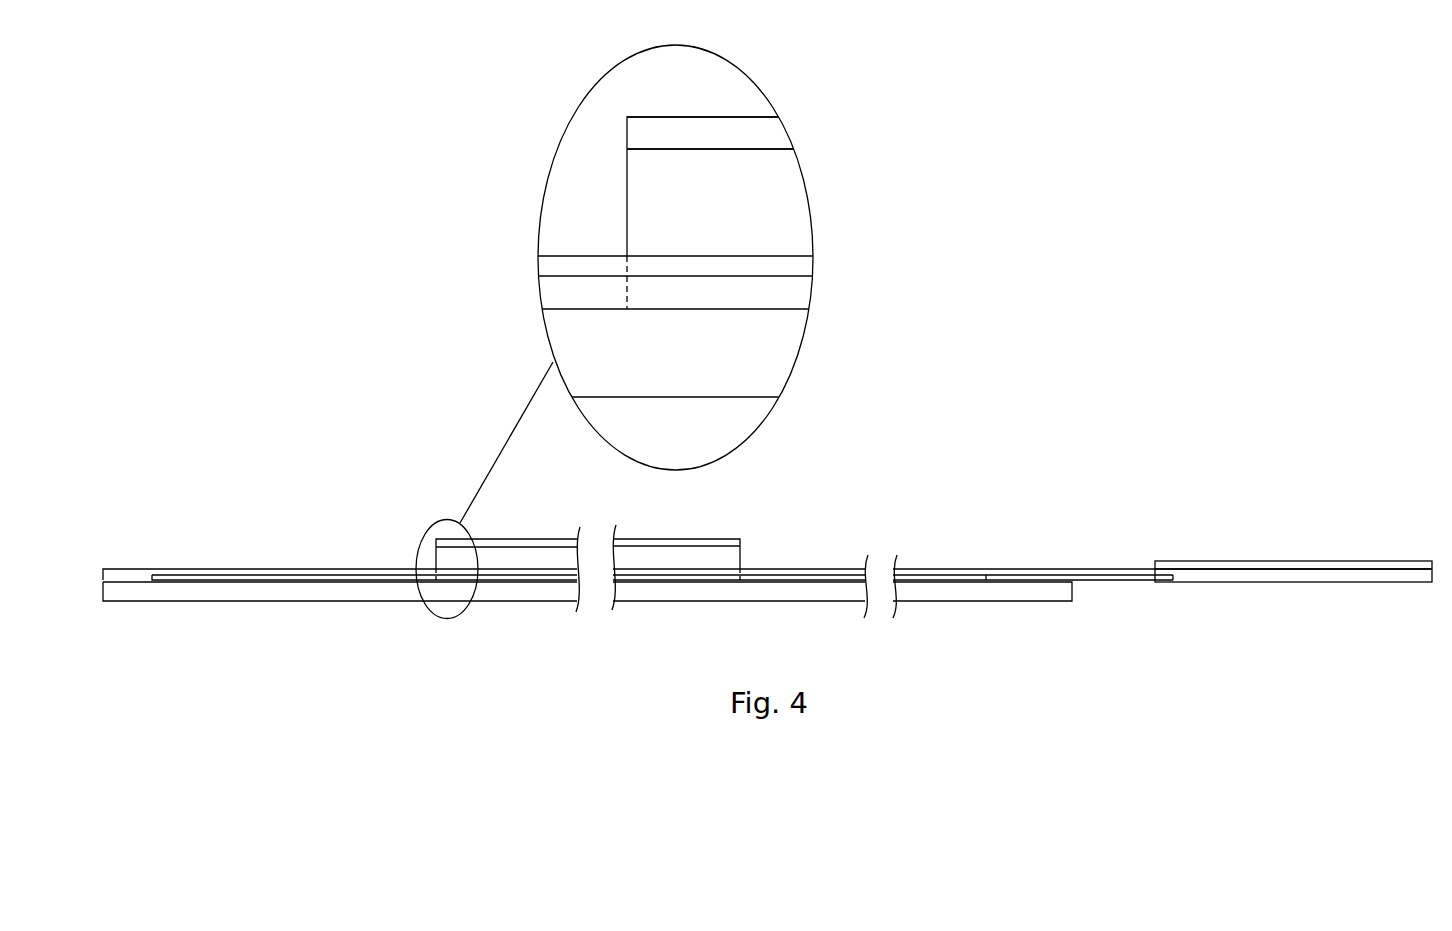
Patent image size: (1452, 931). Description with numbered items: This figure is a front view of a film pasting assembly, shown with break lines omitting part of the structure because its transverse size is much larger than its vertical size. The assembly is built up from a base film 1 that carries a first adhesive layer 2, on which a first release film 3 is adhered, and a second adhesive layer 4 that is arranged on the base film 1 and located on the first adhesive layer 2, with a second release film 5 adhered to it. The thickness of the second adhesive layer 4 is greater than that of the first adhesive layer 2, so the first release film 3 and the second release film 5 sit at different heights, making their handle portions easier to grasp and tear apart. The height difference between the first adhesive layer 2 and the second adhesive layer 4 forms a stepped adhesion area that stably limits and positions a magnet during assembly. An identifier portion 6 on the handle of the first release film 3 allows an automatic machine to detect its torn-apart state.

The base film 1 is at (778, 367).
The first adhesive layer 2 is at (567, 300).
The first release film 3 is at (561, 269).
The second adhesive layer 4 is at (784, 206).
The second release film 5 is at (766, 137).
The identifier portion 6 is at (1256, 566).